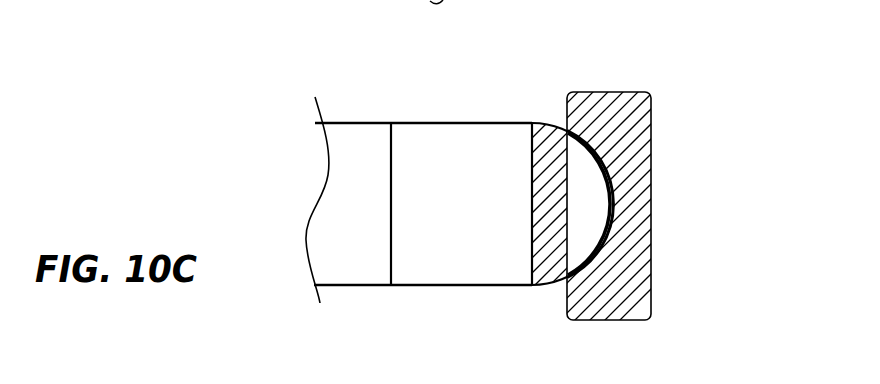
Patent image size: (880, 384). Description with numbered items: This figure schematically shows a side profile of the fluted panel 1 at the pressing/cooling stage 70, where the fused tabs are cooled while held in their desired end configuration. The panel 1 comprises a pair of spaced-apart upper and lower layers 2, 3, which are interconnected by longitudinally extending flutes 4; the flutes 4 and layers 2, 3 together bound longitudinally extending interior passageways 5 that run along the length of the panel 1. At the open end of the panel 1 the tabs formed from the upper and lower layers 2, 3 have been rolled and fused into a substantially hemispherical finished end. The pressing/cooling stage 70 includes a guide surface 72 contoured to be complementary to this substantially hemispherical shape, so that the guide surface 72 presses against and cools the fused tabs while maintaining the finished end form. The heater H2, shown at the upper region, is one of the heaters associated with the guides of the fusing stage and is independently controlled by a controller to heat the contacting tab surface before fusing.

The panel 1 is at (438, 107).
The upper layer 2 is at (470, 122).
The lower layer 3 is at (454, 287).
The flutes 4 is at (531, 173).
The interior passageways 5 is at (452, 222).
The pressing/cooling stage 70 is at (624, 82).
The guide surface 72 is at (585, 152).
The heater H2 is at (747, 0).